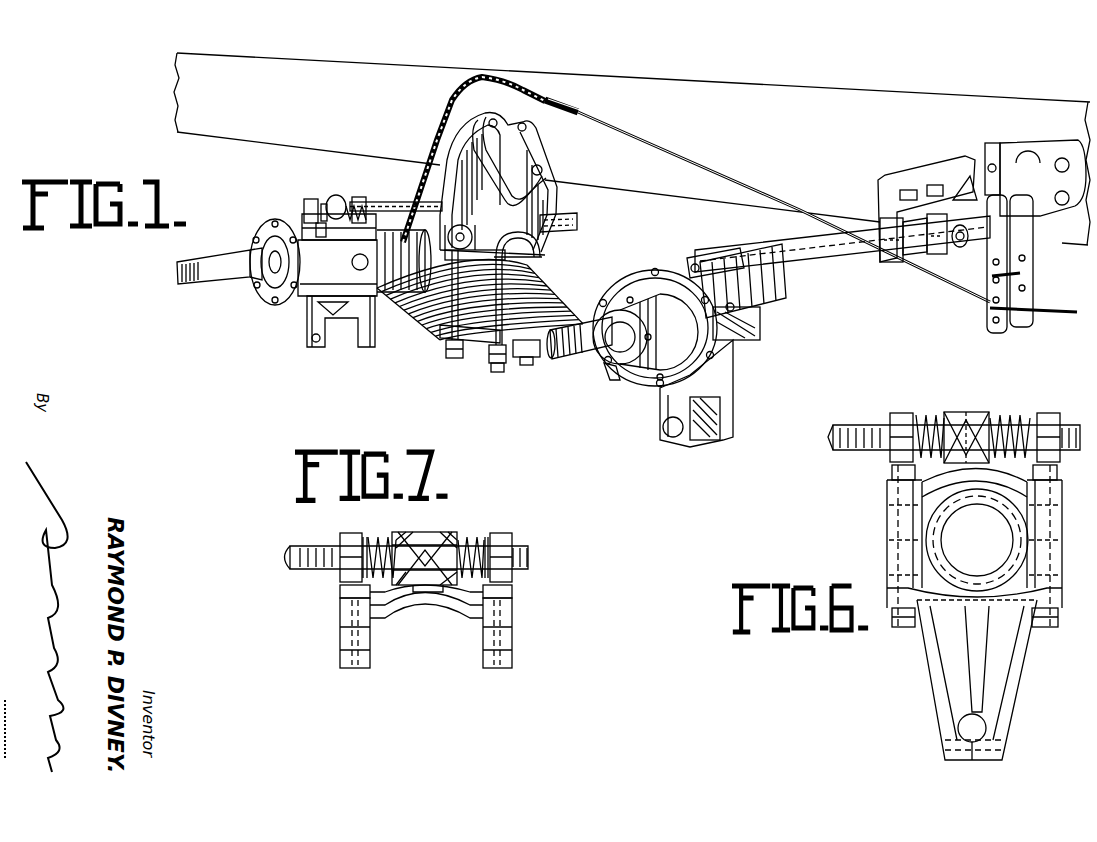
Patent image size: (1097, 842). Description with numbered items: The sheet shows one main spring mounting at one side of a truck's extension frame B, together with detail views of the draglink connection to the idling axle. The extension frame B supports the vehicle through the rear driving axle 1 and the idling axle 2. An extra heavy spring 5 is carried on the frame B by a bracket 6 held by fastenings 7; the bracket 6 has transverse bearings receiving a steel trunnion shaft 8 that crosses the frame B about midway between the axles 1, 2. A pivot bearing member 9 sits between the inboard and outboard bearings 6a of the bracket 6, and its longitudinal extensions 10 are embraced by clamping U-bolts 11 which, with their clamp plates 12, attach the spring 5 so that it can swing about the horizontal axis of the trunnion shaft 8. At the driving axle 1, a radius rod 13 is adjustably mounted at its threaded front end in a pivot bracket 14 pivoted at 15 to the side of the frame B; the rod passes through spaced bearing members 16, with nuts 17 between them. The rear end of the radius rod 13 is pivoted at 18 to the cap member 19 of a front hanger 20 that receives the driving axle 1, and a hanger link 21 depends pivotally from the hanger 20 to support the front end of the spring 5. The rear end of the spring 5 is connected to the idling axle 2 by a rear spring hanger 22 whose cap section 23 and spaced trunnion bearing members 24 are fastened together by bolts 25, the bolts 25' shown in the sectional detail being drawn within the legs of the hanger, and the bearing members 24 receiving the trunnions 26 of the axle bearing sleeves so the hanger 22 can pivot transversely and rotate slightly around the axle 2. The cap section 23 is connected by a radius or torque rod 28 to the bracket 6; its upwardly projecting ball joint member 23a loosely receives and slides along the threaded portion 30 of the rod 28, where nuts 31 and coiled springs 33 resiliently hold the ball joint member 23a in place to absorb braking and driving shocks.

In FIG. 1, the extension frame B is at (958, 102).
In FIG. 1, the rear driving axle 1 is at (598, 360).
In FIG. 1, the idling axle 2 is at (258, 283).
In FIG. 1, the springs 5 is at (523, 332).
In FIG. 1, the brackets 6 is at (540, 157).
In FIG. 1, the inboard and outboard bearings 6a is at (550, 203).
In FIG. 1, the fastenings 7 is at (507, 120).
In FIG. 1, the trunnion shaft 8 is at (577, 224).
In FIG. 1, the pivot bearing member 9 is at (542, 243).
In FIG. 1, the longitudinal extensions 10 is at (537, 255).
In FIG. 1, the clamping U-bolts 11 is at (447, 330).
In FIG. 1, the clamp plates 12 is at (470, 343).
In FIG. 1, the radius rods 13 is at (846, 250).
In FIG. 1, the pivot brackets 14 is at (940, 177).
In FIG. 1, the pivot 15 is at (1000, 145).
In FIG. 1, the bearing members 16 is at (897, 262).
In FIG. 1, the nuts 17 is at (927, 245).
In FIG. 1, the pivot 18 is at (702, 256).
In FIG. 1, the cap members 19 is at (780, 290).
In FIG. 1, the front hangers 20 is at (740, 348).
In FIG. 1, the hanger links 21 is at (733, 413).
In FIG. 1, the rear spring hangers 22 is at (318, 345).
In FIG. 6, the rear spring hangers 22 is at (1007, 688).
In FIG. 1, the cap sections 23 is at (308, 216).
In FIG. 7, the cap sections 23 is at (467, 600).
In FIG. 6, the cap sections 23 is at (900, 487).
In FIG. 7, the ball joint member 23a is at (430, 540).
In FIG. 6, the ball joint member 23a is at (972, 415).
In FIG. 1, the trunnion bearing members 24 is at (310, 314).
In FIG. 7, the trunnion bearing members 24 is at (343, 628).
In FIG. 6, the trunnion bearing members 24 is at (1062, 508).
In FIG. 1, the bolts 25 is at (323, 198).
In FIG. 7, the bolts 25 is at (410, 593).
In FIG. 6, the bolts 25 is at (987, 558).
In FIG. 7, the clamp bolts 25' is at (457, 632).
In FIG. 1, the trunnions 26 is at (360, 254).
In FIG. 6, the trunnions 26 is at (898, 528).
In FIG. 1, the radius rods or torque rods 28 is at (417, 203).
In FIG. 7, the radius rods or torque rods 28 is at (310, 539).
In FIG. 6, the radius rods or torque rods 28 is at (852, 425).
In FIG. 7, the threaded portion 30 is at (528, 557).
In FIG. 6, the threaded portion 30 is at (1073, 425).
In FIG. 1, the nuts 31 is at (311, 199).
In FIG. 7, the nuts 31 is at (353, 538).
In FIG. 6, the nuts 31 is at (900, 415).
In FIG. 7, the coiled springs 33 is at (378, 540).
In FIG. 6, the coiled springs 33 is at (923, 417).